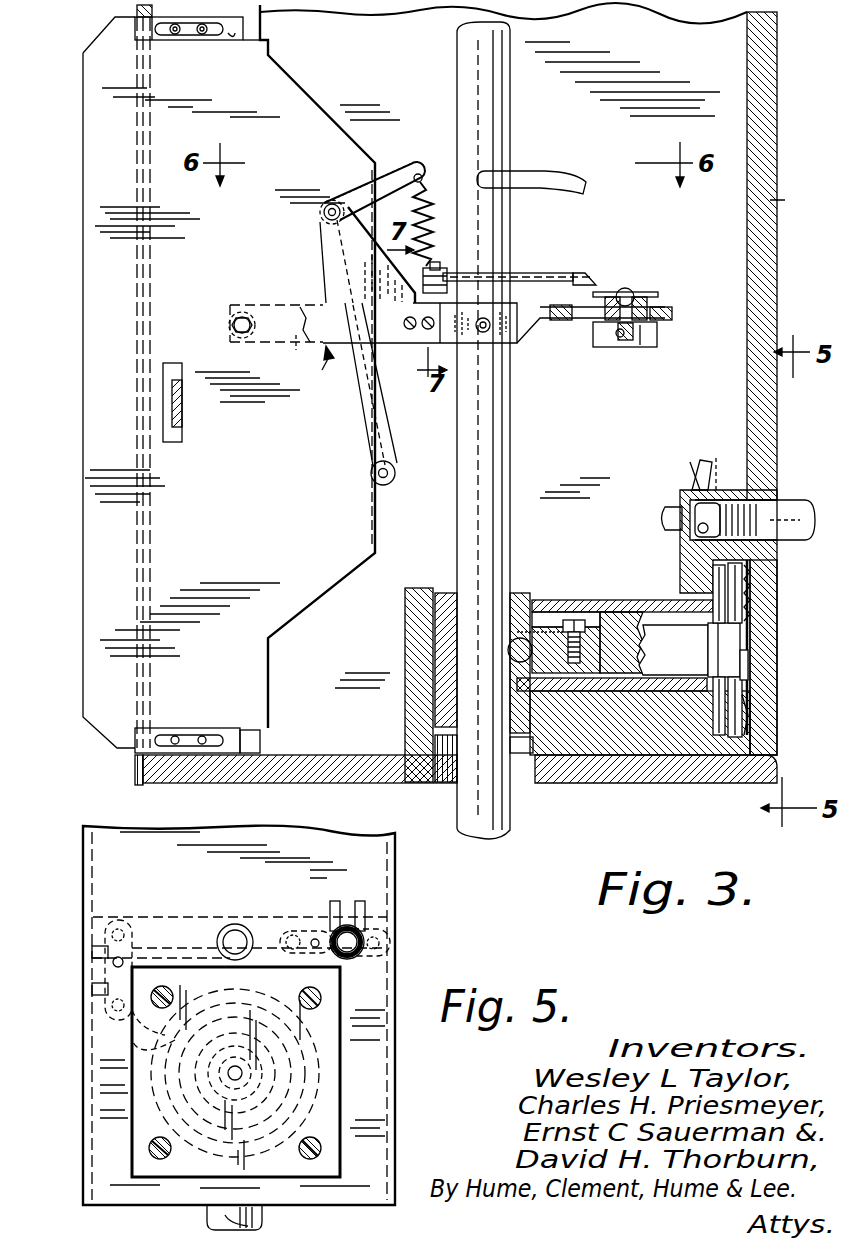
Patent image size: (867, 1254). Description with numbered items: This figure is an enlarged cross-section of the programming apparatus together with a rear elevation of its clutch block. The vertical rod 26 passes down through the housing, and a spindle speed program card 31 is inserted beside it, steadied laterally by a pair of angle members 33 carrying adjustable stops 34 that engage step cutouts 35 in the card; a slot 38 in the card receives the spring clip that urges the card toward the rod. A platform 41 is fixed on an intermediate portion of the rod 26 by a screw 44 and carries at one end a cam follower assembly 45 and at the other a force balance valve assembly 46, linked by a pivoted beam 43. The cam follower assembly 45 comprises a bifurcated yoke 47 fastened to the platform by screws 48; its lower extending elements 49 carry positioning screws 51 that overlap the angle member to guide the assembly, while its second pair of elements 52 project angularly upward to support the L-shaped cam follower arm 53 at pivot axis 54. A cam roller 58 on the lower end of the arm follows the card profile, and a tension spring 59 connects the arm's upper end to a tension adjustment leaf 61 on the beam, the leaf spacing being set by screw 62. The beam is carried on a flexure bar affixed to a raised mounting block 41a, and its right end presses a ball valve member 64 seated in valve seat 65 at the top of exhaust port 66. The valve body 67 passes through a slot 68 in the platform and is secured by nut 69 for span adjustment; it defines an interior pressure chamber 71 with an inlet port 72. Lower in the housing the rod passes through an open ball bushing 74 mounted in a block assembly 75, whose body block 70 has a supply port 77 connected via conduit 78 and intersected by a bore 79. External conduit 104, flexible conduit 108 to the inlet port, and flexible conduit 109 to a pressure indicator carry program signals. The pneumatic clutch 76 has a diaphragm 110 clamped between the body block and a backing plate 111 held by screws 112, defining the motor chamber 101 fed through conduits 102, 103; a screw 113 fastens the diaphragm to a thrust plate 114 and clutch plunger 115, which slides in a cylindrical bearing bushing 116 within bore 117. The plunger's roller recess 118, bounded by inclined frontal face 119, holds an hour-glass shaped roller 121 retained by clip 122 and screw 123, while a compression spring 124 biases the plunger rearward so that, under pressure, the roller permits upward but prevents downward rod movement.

In FIG. 3, the vertical rod 26 is at (512, 448).
In FIG. 3, the spindle speed program card 31 is at (328, 598).
In FIG. 3, the angle members 33 is at (266, 30).
In FIG. 3, the adjustable stops 34 is at (178, 40).
In FIG. 3, the step cutouts 35 is at (232, 42).
In FIG. 3, the slot 38 is at (178, 362).
In FIG. 3, the platform 41 is at (530, 330).
In FIG. 3, the raised mounting block 41a is at (520, 273).
In FIG. 3, the pivoted beam 43 is at (583, 272).
In FIG. 3, the screw 44 is at (483, 333).
In FIG. 3, the cam follower assembly 45 is at (330, 190).
In FIG. 3, the force balance valve assembly 46 is at (667, 286).
In FIG. 3, the bifurcated yoke 47 is at (315, 352).
In FIG. 3, the screws 48 is at (412, 330).
In FIG. 3, the lower pair of extending elements 49 is at (284, 356).
In FIG. 3, the positioning screw 51 is at (232, 312).
In FIG. 3, the second pair of elements 52 is at (355, 252).
In FIG. 3, the L-shaped cam follower arm 53 is at (388, 420).
In FIG. 3, the pivot axis 54 is at (320, 212).
In FIG. 3, the cam roller 58 is at (415, 458).
In FIG. 3, the tension spring 59 is at (422, 172).
In FIG. 3, the tension adjustment leaf 61 is at (445, 285).
In FIG. 3, the screw 62 is at (445, 266).
In FIG. 3, the ball valve member 64 is at (630, 288).
In FIG. 3, the valve seat 65 is at (620, 290).
In FIG. 3, the exhaust port 66 is at (672, 308).
In FIG. 3, the valve body 67 is at (660, 345).
In FIG. 3, the slot 68 is at (590, 325).
In FIG. 3, the valve assembly securing nut 69 is at (650, 292).
In FIG. 3, the body block 70 is at (660, 748).
In FIG. 3, the interior pressure chamber 71 is at (640, 342).
In FIG. 3, the inlet port 72 is at (618, 340).
In FIG. 3, the ball bushing 74 is at (442, 585).
In FIG. 3, the block assembly 75 is at (672, 538).
In FIG. 3, the pneumatic clutch 76 is at (630, 692).
In FIG. 3, the supply port 77 is at (714, 492).
In FIG. 5, the supply port 77 is at (237, 924).
In FIG. 3, the conduit 78 is at (790, 500).
In FIG. 3, the bore 79 is at (668, 510).
In FIG. 5, the bore 79 is at (172, 950).
In FIG. 3, the pneumatic clutch motor chamber 101 is at (752, 716).
In FIG. 5, the pneumatic clutch motor chamber 101 is at (134, 1094).
In FIG. 5, the conduit 102 is at (124, 934).
In FIG. 5, the conduit 103 is at (128, 1050).
In FIG. 3, the external conduit 104 is at (560, 158).
In FIG. 3, the external flexible conduit 108 is at (695, 475).
In FIG. 5, the external flexible conduit 108 is at (372, 905).
In FIG. 3, the external flexible conduit 109 is at (716, 460).
In FIG. 5, the external flexible conduit 109 is at (322, 910).
In FIG. 3, the diaphragm 110 is at (740, 715).
In FIG. 3, the backing plate 111 is at (830, 688).
In FIG. 5, the backing plate 111 is at (322, 1120).
In FIG. 5, the screws 112 is at (320, 997).
In FIG. 3, the screw 113 is at (749, 640).
In FIG. 3, the thrust plate 114 is at (830, 609).
In FIG. 3, the clutch plunger 115 is at (694, 661).
In FIG. 3, the cylindrical bearing bushing 116 is at (652, 670).
In FIG. 3, the bore 117 is at (605, 625).
In FIG. 3, the roller recess 118 is at (510, 660).
In FIG. 3, the frontal face 119 is at (541, 610).
In FIG. 3, the hour-glass shaped roller 121 is at (514, 642).
In FIG. 3, the clip 122 is at (556, 630).
In FIG. 3, the screw 123 is at (584, 604).
In FIG. 3, the compression spring 124 is at (740, 580).